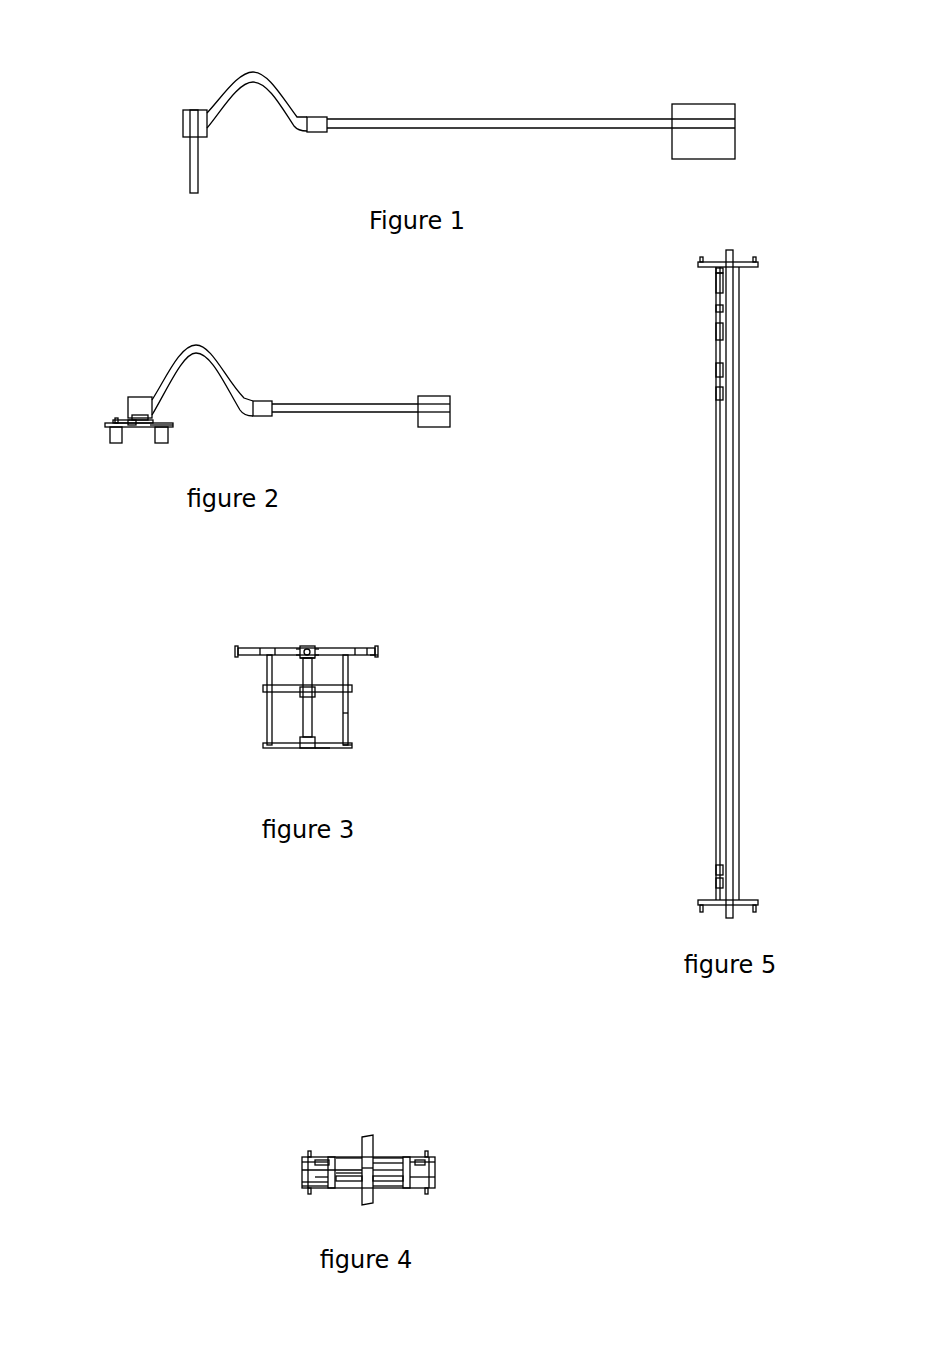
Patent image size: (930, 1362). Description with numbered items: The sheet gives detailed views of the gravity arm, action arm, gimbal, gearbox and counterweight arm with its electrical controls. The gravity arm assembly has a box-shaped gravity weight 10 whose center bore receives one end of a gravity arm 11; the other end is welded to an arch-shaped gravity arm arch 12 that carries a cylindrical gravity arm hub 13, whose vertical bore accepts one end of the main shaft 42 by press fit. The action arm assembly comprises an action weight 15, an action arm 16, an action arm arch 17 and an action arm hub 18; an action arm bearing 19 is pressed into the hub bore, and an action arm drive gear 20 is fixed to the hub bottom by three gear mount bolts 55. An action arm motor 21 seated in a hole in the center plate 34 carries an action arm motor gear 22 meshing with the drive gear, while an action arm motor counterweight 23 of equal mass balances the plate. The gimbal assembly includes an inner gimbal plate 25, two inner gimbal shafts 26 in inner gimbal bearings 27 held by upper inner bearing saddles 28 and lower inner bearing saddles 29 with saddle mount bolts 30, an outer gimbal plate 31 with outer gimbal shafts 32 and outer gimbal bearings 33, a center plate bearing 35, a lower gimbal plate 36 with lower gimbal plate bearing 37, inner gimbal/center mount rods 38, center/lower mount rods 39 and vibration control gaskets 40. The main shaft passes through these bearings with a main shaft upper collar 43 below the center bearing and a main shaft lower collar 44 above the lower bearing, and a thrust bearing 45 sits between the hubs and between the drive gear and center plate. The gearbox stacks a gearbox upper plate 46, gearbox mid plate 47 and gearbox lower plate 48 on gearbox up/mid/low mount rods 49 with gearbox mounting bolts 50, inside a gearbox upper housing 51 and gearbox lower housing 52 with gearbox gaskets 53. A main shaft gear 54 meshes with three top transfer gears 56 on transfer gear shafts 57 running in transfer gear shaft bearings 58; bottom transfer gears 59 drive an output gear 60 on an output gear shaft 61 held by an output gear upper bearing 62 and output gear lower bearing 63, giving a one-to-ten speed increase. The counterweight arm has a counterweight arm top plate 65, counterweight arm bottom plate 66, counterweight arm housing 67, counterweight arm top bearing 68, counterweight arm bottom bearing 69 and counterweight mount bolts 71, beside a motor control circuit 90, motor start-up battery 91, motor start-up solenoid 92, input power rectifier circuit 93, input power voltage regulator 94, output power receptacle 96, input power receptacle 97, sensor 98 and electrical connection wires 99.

In FIG. 1, the gravity weight 10 is at (705, 110).
In FIG. 1, the gravity arm 11 is at (517, 123).
In FIG. 1, the gravity arm arch 12 is at (313, 123).
In FIG. 1, the gravity arm hub 13 is at (187, 128).
In FIG. 1, the main shaft 42 is at (207, 128).
In FIG. 4, the main shaft 42 is at (367, 1155).
In FIG. 2, the action weight 15 is at (443, 400).
In FIG. 2, the action arm 16 is at (328, 407).
In FIG. 2, the action arm arch 17 is at (260, 405).
In FIG. 2, the action arm hub 18 is at (130, 402).
In FIG. 2, the action arm bearing 19 is at (135, 417).
In FIG. 2, the action arm drive gear 20 is at (125, 422).
In FIG. 2, the action arm motor 21 is at (112, 435).
In FIG. 2, the action arm motor gear 22 is at (118, 422).
In FIG. 2, the action arm motor counterweight 23 is at (163, 437).
In FIG. 2, the center plate 34 is at (150, 423).
In FIG. 3, the center plate 34 is at (337, 687).
In FIG. 2, the thrust bearing 45 is at (132, 425).
In FIG. 3, the thrust bearing 45 is at (320, 747).
In FIG. 4, the thrust bearing 45 is at (413, 1157).
In FIG. 3, the inner gimbal plate 25 is at (347, 648).
In FIG. 3, the inner gimbal shaft 26 is at (303, 647).
In FIG. 3, the inner gimbal bearing 27 is at (302, 650).
In FIG. 3, the upper inner bearing saddle 28 is at (305, 648).
In FIG. 3, the lower inner bearing saddle 29 is at (303, 656).
In FIG. 3, the saddle mount bolt 30 is at (303, 648).
In FIG. 3, the outer gimbal plate 31 is at (362, 648).
In FIG. 3, the outer gimbal shaft 32 is at (378, 650).
In FIG. 3, the outer gimbal bearing 33 is at (378, 655).
In FIG. 3, the center plate bearing 35 is at (302, 688).
In FIG. 3, the lower gimbal plate 36 is at (347, 747).
In FIG. 3, the lower gimbal plate bearing 37 is at (303, 741).
In FIG. 3, the inner gimbal/center mount rod 38 is at (347, 667).
In FIG. 3, the center/lower mount rod 39 is at (347, 713).
In FIG. 3, the vibration control gasket 40 is at (310, 648).
In FIG. 3, the main shaft upper collar 43 is at (303, 695).
In FIG. 3, the main shaft lower collar 44 is at (305, 747).
In FIG. 4, the gearbox upper plate 46 is at (322, 1162).
In FIG. 4, the gearbox mid plate 47 is at (307, 1170).
In FIG. 4, the gearbox lower plate 48 is at (380, 1185).
In FIG. 4, the gearbox up/mid/low mount rod 49 is at (437, 1163).
In FIG. 4, the gearbox mounting bolt 50 is at (312, 1188).
In FIG. 4, the gearbox upper housing 51 is at (307, 1163).
In FIG. 4, the gearbox lower housing 52 is at (307, 1182).
In FIG. 4, the gearbox gasket 53 is at (320, 1188).
In FIG. 4, the main shaft gear 54 is at (382, 1162).
In FIG. 4, the gear mount bolt 55 is at (323, 1177).
In FIG. 4, the top transfer gear 56 is at (417, 1163).
In FIG. 4, the transfer gear shaft 57 is at (323, 1170).
In FIG. 4, the transfer gear shaft bearing 58 is at (437, 1178).
In FIG. 4, the bottom transfer gear 59 is at (333, 1183).
In FIG. 4, the output gear 60 is at (355, 1178).
In FIG. 4, the output gear shaft 61 is at (368, 1197).
In FIG. 5, the output gear shaft 61 is at (735, 495).
In FIG. 4, the output gear upper bearing 62 is at (342, 1157).
In FIG. 4, the output gear lower bearing 63 is at (377, 1188).
In FIG. 5, the counterweight arm top plate 65 is at (758, 265).
In FIG. 5, the counterweight arm bottom plate 66 is at (758, 905).
In FIG. 5, the counterweight arm housing 67 is at (745, 462).
In FIG. 5, the counterweight arm top bearing 68 is at (755, 258).
In FIG. 5, the counterweight arm bottom bearing 69 is at (752, 898).
In FIG. 5, the counterweight mount bolt 71 is at (700, 903).
In FIG. 5, the motor control circuit 90 is at (720, 287).
In FIG. 5, the motor start-up battery 91 is at (720, 328).
In FIG. 5, the motor start-up solenoid 92 is at (720, 307).
In FIG. 5, the input power rectifier circuit 93 is at (720, 368).
In FIG. 5, the input power voltage regulator 94 is at (720, 392).
In FIG. 5, the output power receptacle 96 is at (718, 880).
In FIG. 5, the input power receptacle 97 is at (718, 866).
In FIG. 5, the sensor 98 is at (718, 268).
In FIG. 5, the electrical connection wire 99 is at (720, 530).